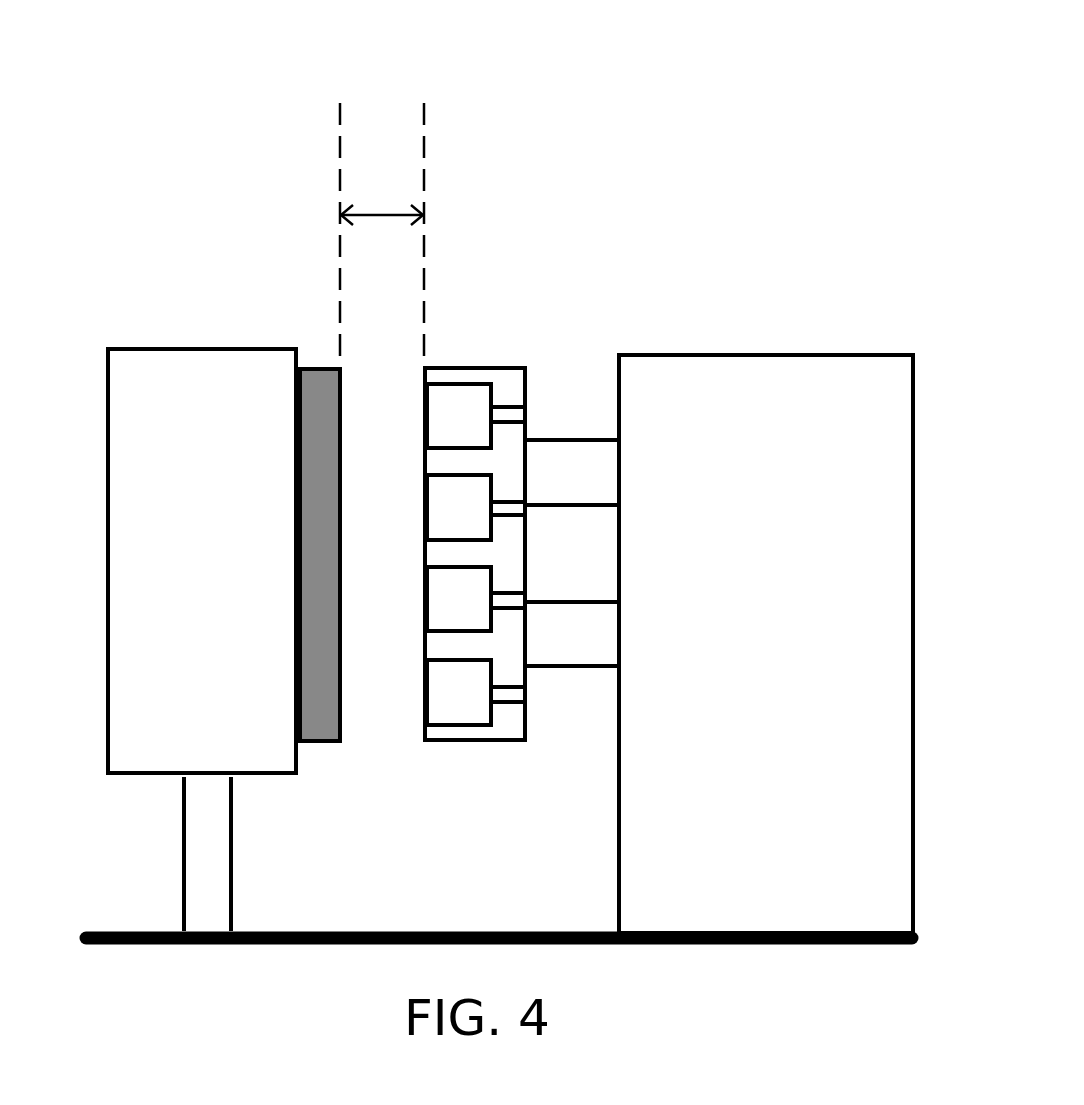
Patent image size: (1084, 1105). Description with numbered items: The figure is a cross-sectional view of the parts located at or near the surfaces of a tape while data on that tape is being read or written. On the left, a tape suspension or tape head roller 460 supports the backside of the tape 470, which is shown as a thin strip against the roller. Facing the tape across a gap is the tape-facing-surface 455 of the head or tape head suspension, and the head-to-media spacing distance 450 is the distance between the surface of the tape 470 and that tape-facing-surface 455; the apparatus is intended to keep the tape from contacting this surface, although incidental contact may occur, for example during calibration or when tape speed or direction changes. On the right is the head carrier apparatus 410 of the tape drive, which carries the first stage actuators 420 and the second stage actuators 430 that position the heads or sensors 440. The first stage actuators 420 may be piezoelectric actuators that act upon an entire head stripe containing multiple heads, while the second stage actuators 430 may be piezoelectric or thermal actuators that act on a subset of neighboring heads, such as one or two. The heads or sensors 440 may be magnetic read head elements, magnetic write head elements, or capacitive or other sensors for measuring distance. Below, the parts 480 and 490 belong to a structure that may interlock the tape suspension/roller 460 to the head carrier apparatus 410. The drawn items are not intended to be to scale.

The head carrier apparatus 410 is at (766, 644).
The first stage actuators 420 is at (572, 553).
The second stage actuators 430 is at (508, 405).
The heads or sensors 440 is at (459, 554).
The head-to-media spacing distance 450 is at (378, 214).
The tape-facing-surface 455 is at (420, 432).
The tape head roller 460 is at (202, 561).
The tape 470 is at (318, 745).
The interlocking structure part 480 is at (183, 797).
The interlocking structure part 490 is at (418, 933).